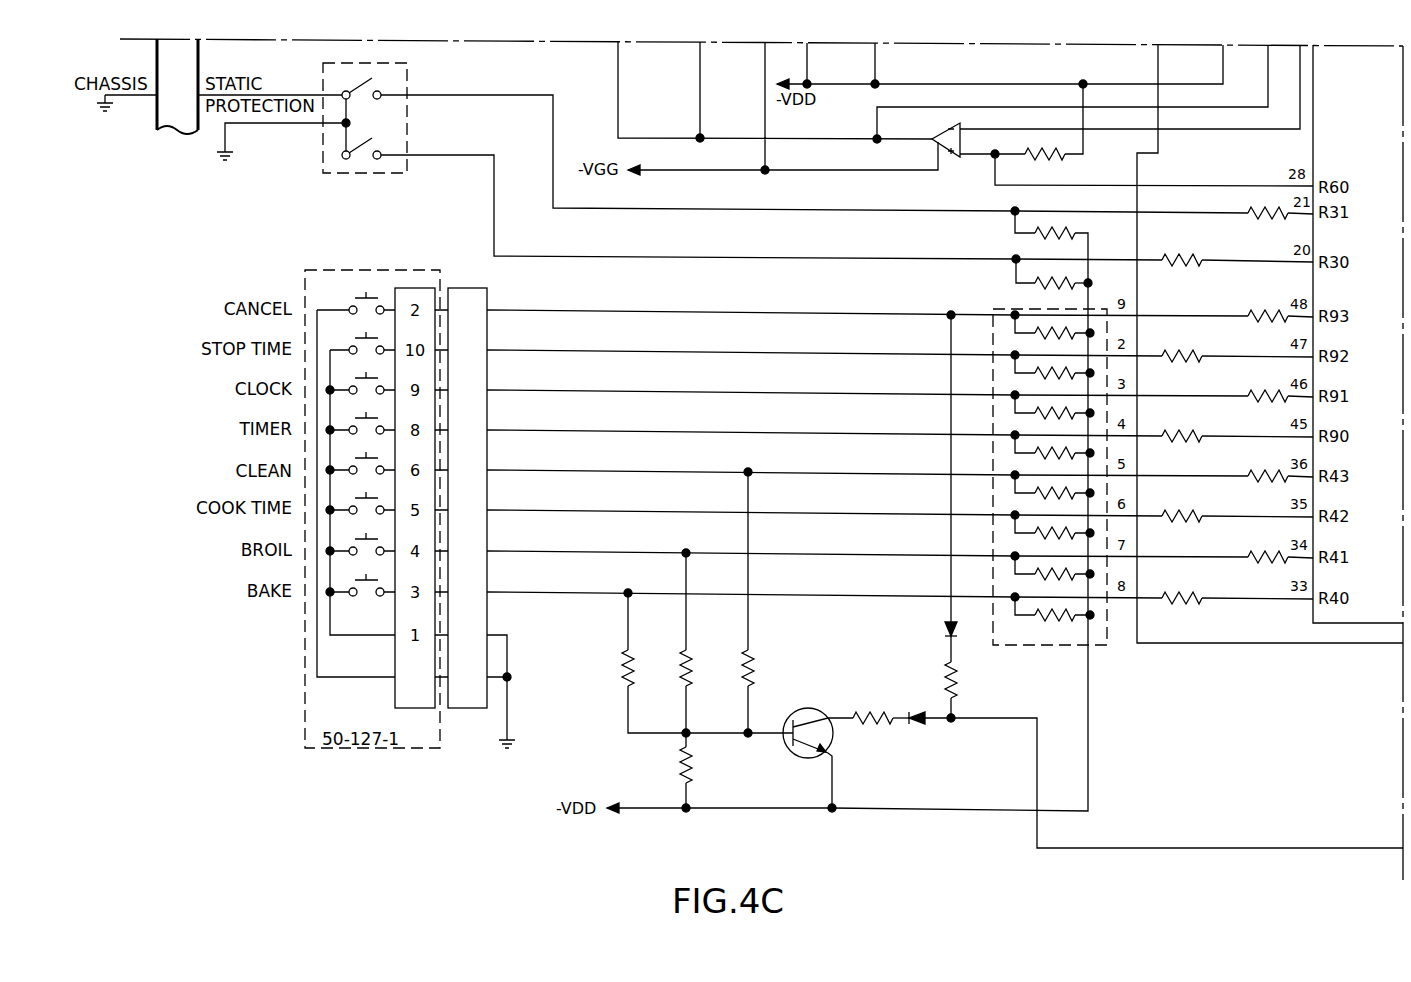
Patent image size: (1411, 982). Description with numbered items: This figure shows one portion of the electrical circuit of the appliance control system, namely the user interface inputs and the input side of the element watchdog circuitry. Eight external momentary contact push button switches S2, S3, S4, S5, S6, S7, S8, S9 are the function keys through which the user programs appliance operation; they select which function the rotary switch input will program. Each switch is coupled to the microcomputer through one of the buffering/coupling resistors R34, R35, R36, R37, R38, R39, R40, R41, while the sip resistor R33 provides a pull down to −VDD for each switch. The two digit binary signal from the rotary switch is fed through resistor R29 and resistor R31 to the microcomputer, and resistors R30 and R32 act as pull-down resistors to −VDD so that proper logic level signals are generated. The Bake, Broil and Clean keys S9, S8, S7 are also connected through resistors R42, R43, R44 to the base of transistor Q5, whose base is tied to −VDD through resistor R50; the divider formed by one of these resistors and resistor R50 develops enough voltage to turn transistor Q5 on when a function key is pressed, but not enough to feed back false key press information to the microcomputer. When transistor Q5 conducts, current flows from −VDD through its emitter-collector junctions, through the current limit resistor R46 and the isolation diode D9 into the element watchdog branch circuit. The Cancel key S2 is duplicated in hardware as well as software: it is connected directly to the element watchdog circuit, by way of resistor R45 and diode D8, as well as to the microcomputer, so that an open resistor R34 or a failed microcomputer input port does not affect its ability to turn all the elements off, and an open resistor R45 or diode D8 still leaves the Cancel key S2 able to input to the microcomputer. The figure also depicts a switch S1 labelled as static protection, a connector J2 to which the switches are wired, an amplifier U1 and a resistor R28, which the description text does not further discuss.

The static protection switch S1 is at (359, 107).
The Cancel key S2 is at (365, 298).
The momentary contact push button switch S3 is at (365, 418).
The momentary contact push button switch S4 is at (365, 378).
The momentary contact push button switch S5 is at (365, 498).
The momentary contact push button switch S6 is at (365, 338).
The Clean key S7 is at (365, 458).
The Broil key S8 is at (365, 539).
The Bake key S9 is at (365, 580).
The connector J2 is at (461, 486).
The operational amplifier U1 is at (950, 146).
The resistor 47K R28 is at (1051, 130).
The resistor R29 is at (1279, 212).
The pull-down resistor R30 is at (1051, 246).
The resistor R31 is at (1234, 258).
The pull-down resistor R32 is at (1052, 280).
The sip resistor R33 is at (1004, 466).
The buffering/coupling resistor R34 is at (1264, 318).
The buffering/coupling resistor R35 is at (1179, 353).
The buffering/coupling resistor R36 is at (1264, 398).
The buffering/coupling resistor R37 is at (1179, 433).
The buffering/coupling resistor R38 is at (1264, 478).
The buffering/coupling resistor R39 is at (1179, 513).
The buffering/coupling resistor R40 is at (1264, 559).
The buffering/coupling resistor R41 is at (1179, 595).
The resistor R42 is at (654, 663).
The resistor R43 is at (702, 643).
The resistor R44 is at (764, 602).
The resistor R45 is at (967, 677).
The current limit resistor R46 is at (877, 720).
The resistor R50 is at (665, 770).
The diode D8 is at (964, 633).
The isolation diode D9 is at (926, 707).
The transistor Q5 is at (790, 758).